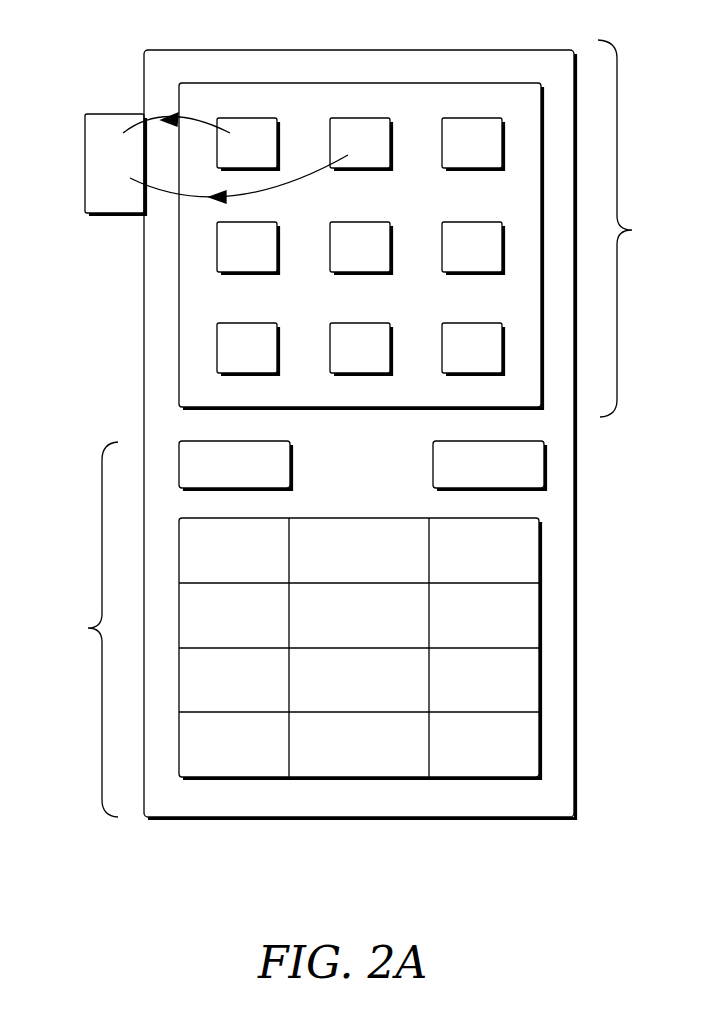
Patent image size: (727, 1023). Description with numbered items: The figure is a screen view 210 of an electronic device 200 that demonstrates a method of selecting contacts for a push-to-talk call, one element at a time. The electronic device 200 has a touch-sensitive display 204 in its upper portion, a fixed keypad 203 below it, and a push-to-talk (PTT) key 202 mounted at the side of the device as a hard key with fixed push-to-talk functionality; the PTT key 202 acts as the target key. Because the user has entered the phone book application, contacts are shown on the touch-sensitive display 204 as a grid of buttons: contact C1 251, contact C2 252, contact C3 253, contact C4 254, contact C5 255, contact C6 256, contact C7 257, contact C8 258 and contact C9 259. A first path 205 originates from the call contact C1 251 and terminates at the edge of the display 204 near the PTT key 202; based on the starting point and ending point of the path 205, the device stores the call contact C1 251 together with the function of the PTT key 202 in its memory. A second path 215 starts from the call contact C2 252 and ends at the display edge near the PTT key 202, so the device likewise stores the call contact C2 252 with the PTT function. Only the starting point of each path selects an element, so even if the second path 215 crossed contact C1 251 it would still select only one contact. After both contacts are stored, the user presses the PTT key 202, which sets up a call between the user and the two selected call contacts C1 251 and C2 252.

The electronic device 200 is at (568, 899).
The push-to-talk (PTT) key 202 is at (85, 161).
The fixed keypad 203 is at (294, 629).
The touch-sensitive display 204 is at (358, 83).
The first path 205 is at (187, 117).
The screen view 210 is at (429, 216).
The second path 215 is at (327, 178).
The contact C1 251 is at (260, 118).
The contact C2 252 is at (373, 118).
The contact C3 253 is at (472, 118).
The contact C4 254 is at (262, 222).
The contact C5 255 is at (380, 222).
The contact C6 256 is at (472, 222).
The contact C7 257 is at (262, 323).
The contact button C8 258 is at (373, 323).
The contact button C9 259 is at (472, 323).